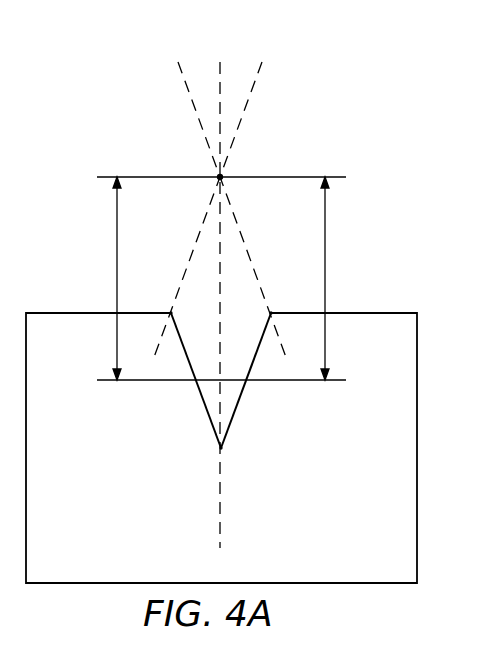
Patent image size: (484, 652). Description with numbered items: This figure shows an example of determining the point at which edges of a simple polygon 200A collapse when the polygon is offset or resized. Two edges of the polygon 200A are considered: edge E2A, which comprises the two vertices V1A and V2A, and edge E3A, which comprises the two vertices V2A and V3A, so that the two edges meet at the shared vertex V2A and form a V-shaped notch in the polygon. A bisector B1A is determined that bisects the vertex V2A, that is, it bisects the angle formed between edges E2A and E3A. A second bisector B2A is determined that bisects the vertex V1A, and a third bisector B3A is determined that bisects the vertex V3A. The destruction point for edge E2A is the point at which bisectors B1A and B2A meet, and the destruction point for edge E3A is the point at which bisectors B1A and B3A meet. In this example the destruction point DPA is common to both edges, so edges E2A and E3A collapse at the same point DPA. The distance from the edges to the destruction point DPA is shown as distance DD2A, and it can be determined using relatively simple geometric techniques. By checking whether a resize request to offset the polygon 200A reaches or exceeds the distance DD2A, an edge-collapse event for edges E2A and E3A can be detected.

The simple polygon 200A is at (74, 306).
The edge E2A is at (206, 405).
The edge E3A is at (236, 405).
The bisector B1A is at (218, 70).
The bisector B2A is at (258, 82).
The bisector B3A is at (185, 82).
The destruction point DPA is at (216, 173).
The distance to destruction point DD2A is at (117, 232).
The vertex V1A is at (170, 310).
The vertex V2A is at (219, 452).
The vertex V3A is at (272, 310).